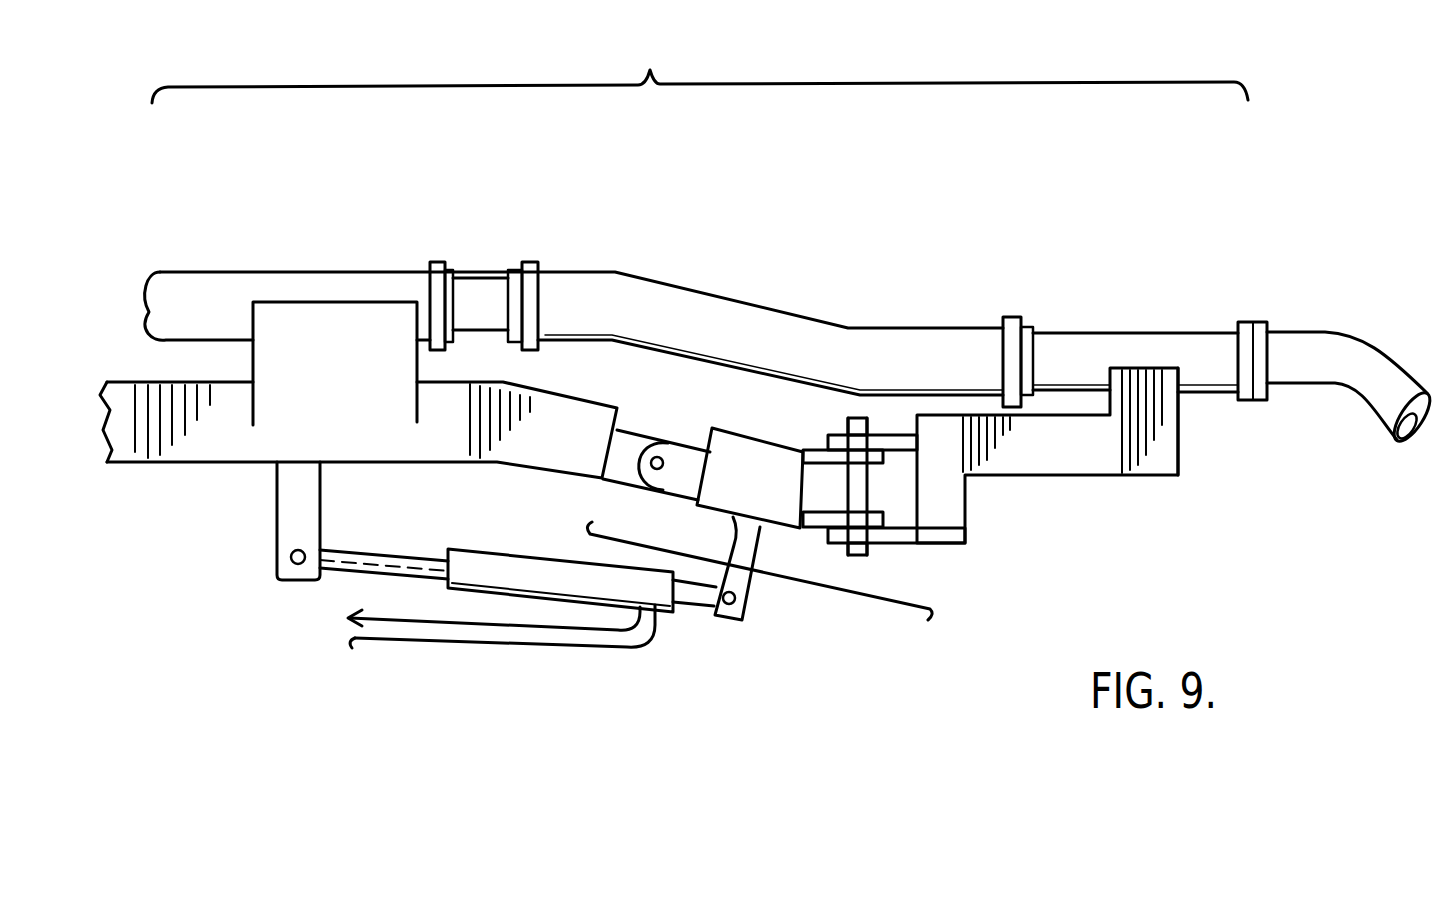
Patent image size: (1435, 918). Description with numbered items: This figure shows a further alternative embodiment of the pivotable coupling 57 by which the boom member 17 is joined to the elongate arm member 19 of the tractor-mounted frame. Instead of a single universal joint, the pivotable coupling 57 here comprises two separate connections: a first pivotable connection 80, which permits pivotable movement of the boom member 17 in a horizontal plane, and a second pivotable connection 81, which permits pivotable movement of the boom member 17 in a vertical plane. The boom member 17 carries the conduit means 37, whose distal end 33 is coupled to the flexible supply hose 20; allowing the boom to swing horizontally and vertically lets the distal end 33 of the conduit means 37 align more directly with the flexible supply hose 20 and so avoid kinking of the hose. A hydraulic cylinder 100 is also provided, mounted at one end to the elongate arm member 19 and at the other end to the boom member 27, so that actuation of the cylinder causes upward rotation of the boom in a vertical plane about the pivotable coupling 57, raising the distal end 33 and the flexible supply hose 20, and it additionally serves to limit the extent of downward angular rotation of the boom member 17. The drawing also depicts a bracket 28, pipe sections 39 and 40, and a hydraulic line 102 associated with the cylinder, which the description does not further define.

The boom member 17 is at (1068, 459).
The elongate arm member 19 is at (203, 440).
The flexible supply hose 20 is at (1347, 357).
The boom member 27 is at (1158, 388).
The mounting plate 28 is at (922, 488).
The distal end of conduit means 33 is at (1098, 355).
The conduit means 37 is at (700, 61).
The pipe 39 is at (732, 318).
The coupling block 40 is at (320, 285).
The pivotable coupling 57 is at (800, 580).
The first pivotable connection 80 is at (897, 478).
The second pivotable connection 81 is at (667, 443).
The hydraulic cylinder 100 is at (510, 572).
The hydraulic line 102 is at (500, 640).